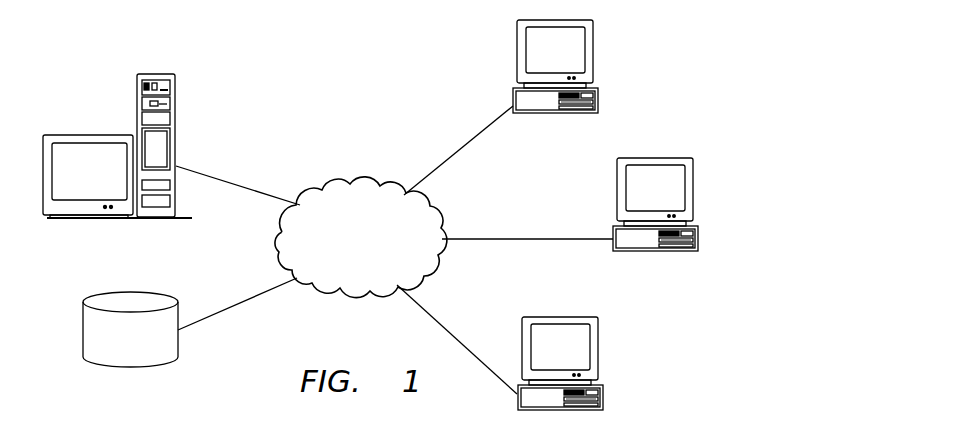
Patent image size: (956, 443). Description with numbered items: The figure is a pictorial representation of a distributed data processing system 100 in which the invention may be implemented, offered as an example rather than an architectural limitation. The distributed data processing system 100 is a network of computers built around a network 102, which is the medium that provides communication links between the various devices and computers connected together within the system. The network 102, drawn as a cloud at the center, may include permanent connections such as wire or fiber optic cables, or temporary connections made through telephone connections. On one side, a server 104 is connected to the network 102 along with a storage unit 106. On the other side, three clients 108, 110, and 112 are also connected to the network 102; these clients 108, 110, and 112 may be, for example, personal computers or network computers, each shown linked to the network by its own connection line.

The distributed data processing system 100 is at (249, 57).
The network 102 is at (381, 252).
The server 104 is at (137, 97).
The storage unit 106 is at (83, 331).
The client 108 is at (593, 60).
The client 110 is at (692, 195).
The client 112 is at (597, 355).